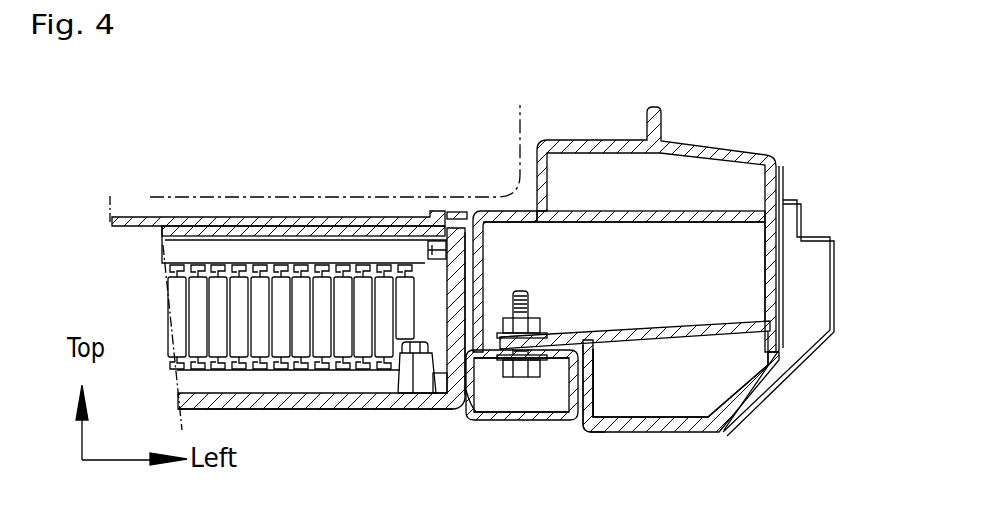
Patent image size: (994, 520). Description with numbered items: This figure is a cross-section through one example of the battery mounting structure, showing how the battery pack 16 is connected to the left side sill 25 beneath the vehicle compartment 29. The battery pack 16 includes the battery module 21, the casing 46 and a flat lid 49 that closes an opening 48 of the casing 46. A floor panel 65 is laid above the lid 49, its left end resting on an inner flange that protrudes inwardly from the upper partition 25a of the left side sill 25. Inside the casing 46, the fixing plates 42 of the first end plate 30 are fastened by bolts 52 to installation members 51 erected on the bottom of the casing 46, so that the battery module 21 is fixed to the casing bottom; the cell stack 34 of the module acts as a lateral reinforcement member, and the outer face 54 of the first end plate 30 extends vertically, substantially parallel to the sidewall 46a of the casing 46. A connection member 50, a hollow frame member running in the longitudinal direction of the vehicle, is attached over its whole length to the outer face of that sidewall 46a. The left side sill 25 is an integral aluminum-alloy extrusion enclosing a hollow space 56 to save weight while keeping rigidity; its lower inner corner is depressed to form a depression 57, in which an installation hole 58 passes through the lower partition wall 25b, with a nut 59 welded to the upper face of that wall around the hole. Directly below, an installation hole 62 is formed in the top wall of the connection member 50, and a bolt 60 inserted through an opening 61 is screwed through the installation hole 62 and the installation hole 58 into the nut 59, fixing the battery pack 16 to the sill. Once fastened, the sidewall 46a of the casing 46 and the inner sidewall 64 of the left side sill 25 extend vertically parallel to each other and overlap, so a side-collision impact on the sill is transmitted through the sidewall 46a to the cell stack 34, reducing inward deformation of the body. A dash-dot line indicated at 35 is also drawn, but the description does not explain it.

The battery pack 16 is at (288, 442).
The battery module 21 is at (151, 253).
The left side sill 25 is at (631, 275).
The upper partition 25a is at (650, 226).
The lower partition wall 25b is at (670, 339).
The vehicle compartment 29 is at (300, 196).
The first end plate 30 is at (435, 250).
The cell stack 34 is at (256, 314).
The side surface of battery module 35 is at (180, 317).
The fixing plates 42 is at (370, 347).
The casing 46 is at (349, 424).
The sidewall 46a is at (468, 414).
The opening 48 is at (451, 213).
The lid 49 is at (201, 232).
The connection member 50 is at (522, 425).
The installation members 51 is at (415, 367).
The bolts 52 is at (403, 331).
The outer face 54 is at (483, 273).
The hollow space 56 is at (785, 201).
The depression 57 is at (583, 408).
The installation hole 58 is at (552, 339).
The nut 59 is at (537, 317).
The bolt 60 is at (503, 366).
The opening 61 is at (507, 420).
The installation hole 62 is at (556, 358).
The inner sidewall 64 is at (462, 302).
The floor panel 65 is at (376, 203).